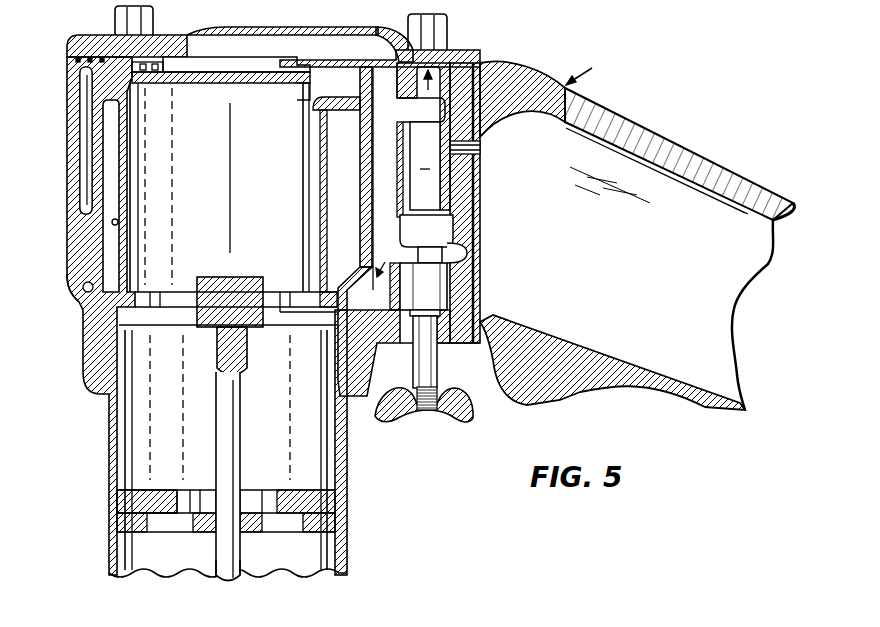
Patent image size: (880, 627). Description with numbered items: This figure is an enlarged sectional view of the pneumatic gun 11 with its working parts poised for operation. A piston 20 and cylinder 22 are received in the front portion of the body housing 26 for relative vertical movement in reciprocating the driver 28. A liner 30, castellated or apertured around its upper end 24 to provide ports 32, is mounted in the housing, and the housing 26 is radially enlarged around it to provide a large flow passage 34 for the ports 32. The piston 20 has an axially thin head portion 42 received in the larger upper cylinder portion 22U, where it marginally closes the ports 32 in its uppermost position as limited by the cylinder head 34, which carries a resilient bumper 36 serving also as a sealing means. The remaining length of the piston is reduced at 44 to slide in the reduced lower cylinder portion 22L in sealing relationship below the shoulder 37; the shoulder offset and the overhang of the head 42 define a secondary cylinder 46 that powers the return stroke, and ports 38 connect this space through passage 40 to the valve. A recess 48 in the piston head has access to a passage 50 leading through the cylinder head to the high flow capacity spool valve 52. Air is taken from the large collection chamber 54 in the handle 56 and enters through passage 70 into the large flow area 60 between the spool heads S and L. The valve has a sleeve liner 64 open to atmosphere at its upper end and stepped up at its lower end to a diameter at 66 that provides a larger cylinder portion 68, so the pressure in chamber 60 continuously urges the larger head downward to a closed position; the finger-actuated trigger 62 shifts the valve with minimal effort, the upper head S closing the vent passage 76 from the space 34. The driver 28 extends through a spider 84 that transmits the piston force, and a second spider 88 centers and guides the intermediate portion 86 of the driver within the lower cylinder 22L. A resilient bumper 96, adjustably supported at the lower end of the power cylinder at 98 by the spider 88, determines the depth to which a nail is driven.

The pneumatic gun 11 is at (589, 69).
The piston 20 is at (112, 181).
The cylinder 22 is at (340, 201).
The upper cylinder portion 22U is at (110, 146).
The lower cylinder portion 22L is at (126, 413).
The upper end of liner 24 is at (73, 62).
The body housing 26 is at (78, 274).
The driver 28 is at (220, 568).
The liner 30 is at (81, 122).
The ports 32 is at (87, 78).
The cylinder head 34 is at (176, 34).
The resilient bumper 36 is at (108, 33).
The shoulder 37 is at (313, 107).
The ports 38 is at (342, 271).
The passage 40 is at (362, 265).
The piston head portion 42 is at (219, 79).
The reduced piston portion 44 is at (118, 221).
The secondary cylinder 46 is at (350, 175).
The recess 48 is at (245, 70).
The passage 50 is at (420, 16).
The spool valve 52 is at (483, 100).
The collection chamber 54 is at (697, 195).
The handle 56 is at (668, 141).
The flow area 60 is at (458, 200).
The trigger 62 is at (447, 413).
The sleeve liner 64 is at (470, 63).
The step-up diameter 66 is at (444, 216).
The larger diameter cylinder portion 68 is at (444, 236).
The passage 70 is at (487, 255).
The vent passage 76 is at (447, 57).
The spider 84 is at (182, 318).
The intermediate portion of driver 86 is at (231, 433).
The spider 88 is at (250, 510).
The resilient bumper 96 is at (126, 502).
The bumper support 98 is at (115, 530).